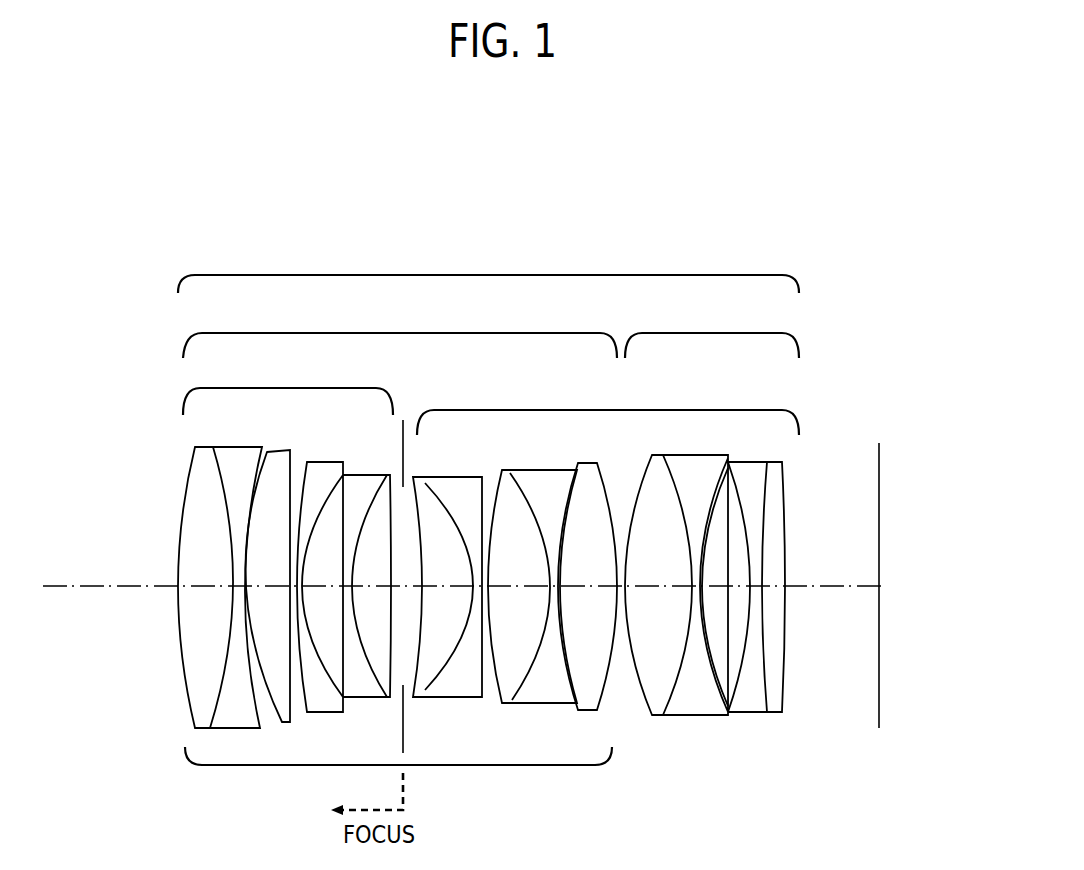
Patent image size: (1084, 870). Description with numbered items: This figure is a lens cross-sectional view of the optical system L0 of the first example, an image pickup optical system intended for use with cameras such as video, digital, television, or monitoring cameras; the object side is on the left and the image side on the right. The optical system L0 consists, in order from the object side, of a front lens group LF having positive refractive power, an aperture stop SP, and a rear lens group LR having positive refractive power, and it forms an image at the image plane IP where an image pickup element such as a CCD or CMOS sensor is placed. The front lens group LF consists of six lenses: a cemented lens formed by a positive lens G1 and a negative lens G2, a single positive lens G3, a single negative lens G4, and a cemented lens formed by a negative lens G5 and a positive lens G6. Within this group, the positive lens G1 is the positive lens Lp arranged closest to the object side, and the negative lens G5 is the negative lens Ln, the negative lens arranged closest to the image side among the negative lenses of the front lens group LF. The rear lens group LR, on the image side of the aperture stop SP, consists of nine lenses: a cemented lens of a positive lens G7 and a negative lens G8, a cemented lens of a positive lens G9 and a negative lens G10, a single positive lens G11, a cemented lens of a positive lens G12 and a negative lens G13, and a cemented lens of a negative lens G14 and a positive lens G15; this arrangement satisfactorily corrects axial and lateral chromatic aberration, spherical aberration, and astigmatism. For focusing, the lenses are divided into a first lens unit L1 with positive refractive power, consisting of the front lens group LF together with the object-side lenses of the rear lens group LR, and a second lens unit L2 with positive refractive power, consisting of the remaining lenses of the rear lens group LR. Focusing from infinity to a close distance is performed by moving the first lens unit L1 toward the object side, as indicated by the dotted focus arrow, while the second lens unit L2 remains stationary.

The optical system L0 is at (488, 266).
The first lens unit L1 is at (400, 329).
The second lens unit L2 is at (712, 328).
The front lens group LF is at (288, 387).
The rear lens group LR is at (608, 407).
The positive lens Lp is at (206, 408).
The negative lens Ln is at (349, 415).
The aperture stop SP is at (403, 411).
The image plane IP is at (879, 500).
The positive lens G1 is at (197, 470).
The negative lens G2 is at (240, 462).
The positive lens G3 is at (285, 472).
The negative lens G4 is at (318, 473).
The negative lens G5 is at (365, 492).
The positive lens G6 is at (380, 495).
The positive lens G7 is at (420, 480).
The negative lens G8 is at (452, 483).
The positive lens G9 is at (503, 480).
The negative lens G10 is at (538, 482).
The positive lens G11 is at (587, 473).
The positive lens G12 is at (657, 467).
The negative lens G13 is at (697, 467).
The negative lens G14 is at (743, 470).
The positive lens G15 is at (773, 480).